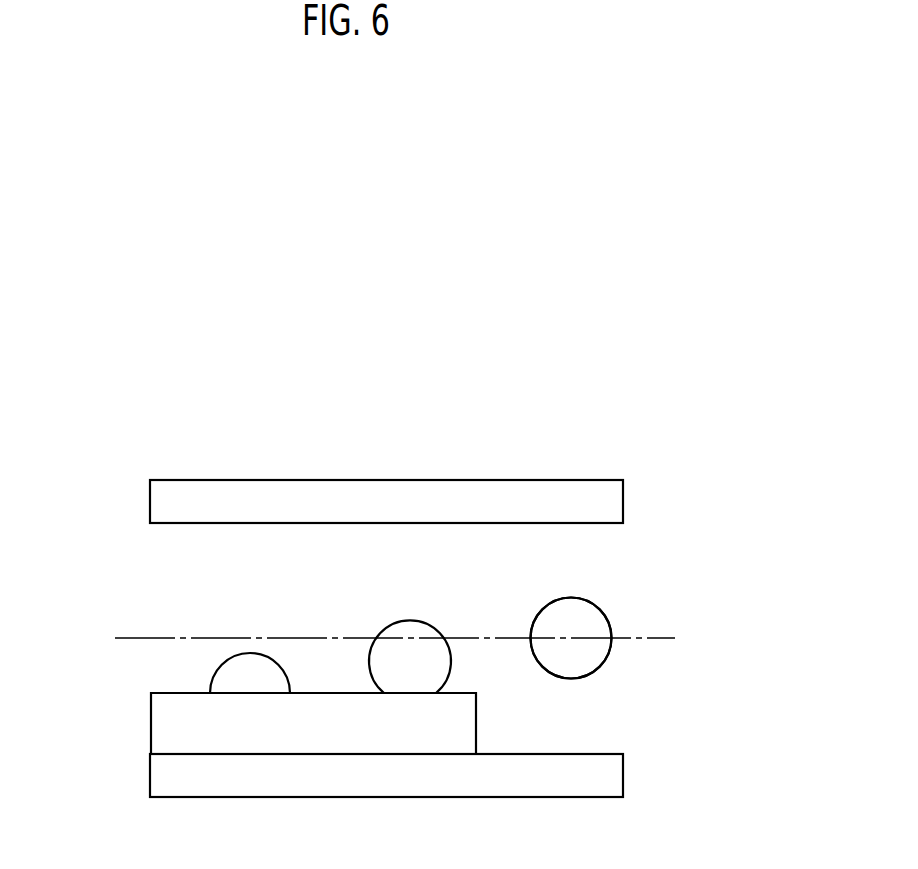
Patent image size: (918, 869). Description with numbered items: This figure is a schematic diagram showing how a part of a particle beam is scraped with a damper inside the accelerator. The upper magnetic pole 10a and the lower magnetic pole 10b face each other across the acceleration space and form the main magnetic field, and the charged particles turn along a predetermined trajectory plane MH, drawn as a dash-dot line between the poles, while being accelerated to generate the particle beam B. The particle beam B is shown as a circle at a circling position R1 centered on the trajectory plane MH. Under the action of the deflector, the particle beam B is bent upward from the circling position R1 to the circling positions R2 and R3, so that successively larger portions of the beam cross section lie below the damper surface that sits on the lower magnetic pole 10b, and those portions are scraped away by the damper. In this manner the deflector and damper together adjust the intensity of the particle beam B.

The upper magnetic pole 10a is at (578, 497).
The lower magnetic pole 10b is at (582, 780).
The trajectory plane MH is at (137, 639).
The circling position R3 is at (236, 626).
The circling position R2 is at (377, 616).
The circling position R1 is at (526, 598).
The particle beam B is at (580, 665).